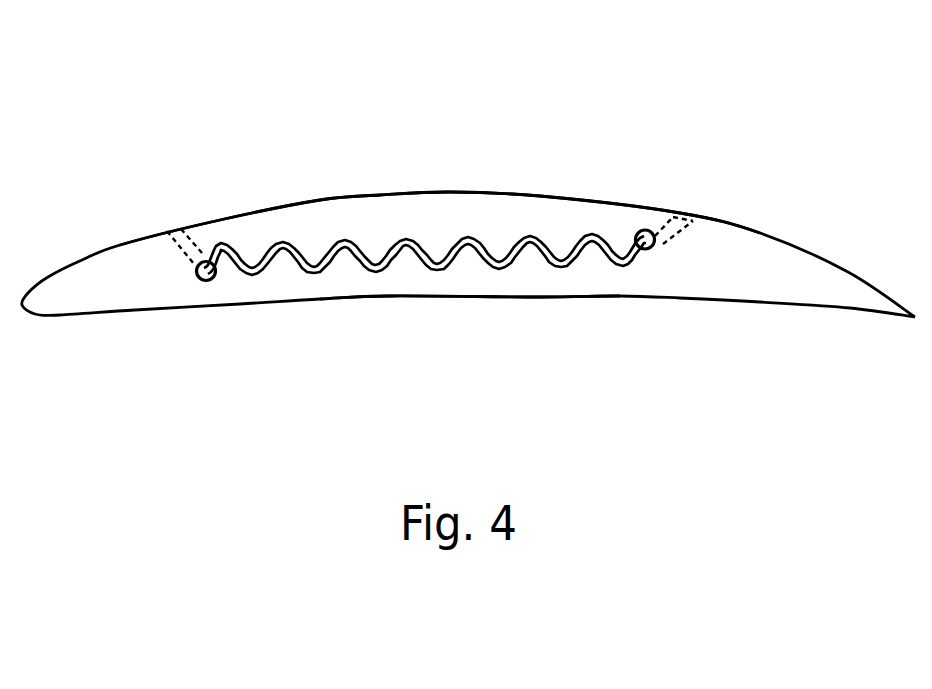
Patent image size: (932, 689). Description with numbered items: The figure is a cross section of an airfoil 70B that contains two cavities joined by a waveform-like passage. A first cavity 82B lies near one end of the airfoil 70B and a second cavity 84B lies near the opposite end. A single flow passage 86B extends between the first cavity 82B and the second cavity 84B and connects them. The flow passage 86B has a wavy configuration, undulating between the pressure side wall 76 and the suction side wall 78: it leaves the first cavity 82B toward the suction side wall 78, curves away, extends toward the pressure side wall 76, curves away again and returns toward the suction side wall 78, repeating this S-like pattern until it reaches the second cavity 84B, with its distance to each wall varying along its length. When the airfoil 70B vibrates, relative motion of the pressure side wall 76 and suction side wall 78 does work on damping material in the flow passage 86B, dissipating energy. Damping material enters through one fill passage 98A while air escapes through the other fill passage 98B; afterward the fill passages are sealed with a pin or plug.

The airfoil 70B is at (803, 165).
The suction side wall 78 is at (542, 195).
The pressure side wall 76 is at (545, 297).
The flow passage 86B is at (442, 267).
The first cavity 82B is at (207, 283).
The second cavity 84B is at (641, 231).
The fill passage 98A is at (195, 247).
The fill passage 98B is at (673, 231).